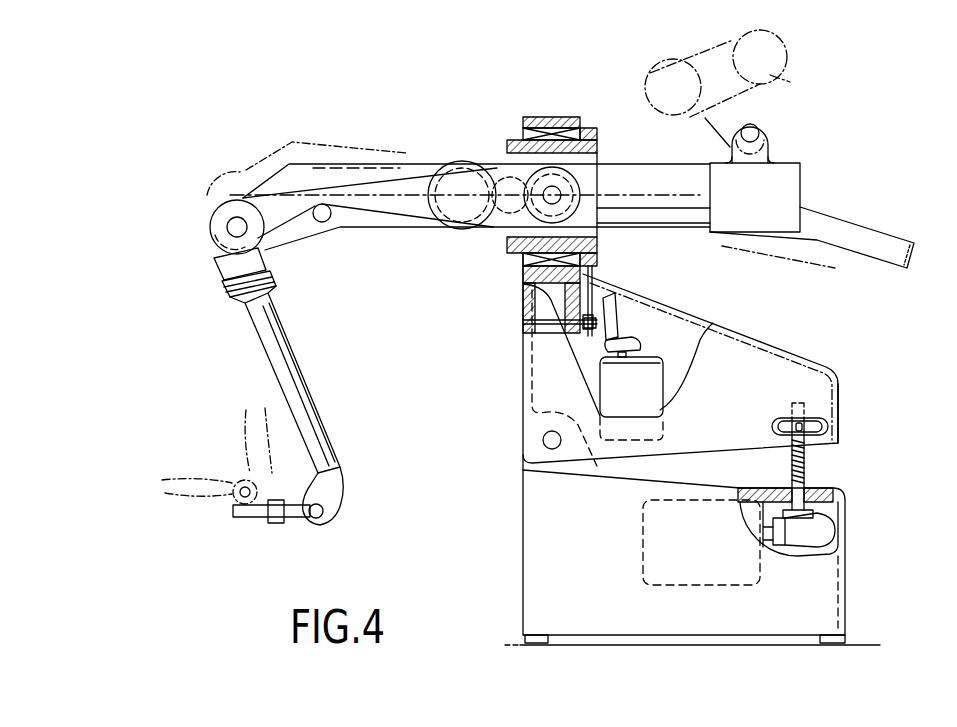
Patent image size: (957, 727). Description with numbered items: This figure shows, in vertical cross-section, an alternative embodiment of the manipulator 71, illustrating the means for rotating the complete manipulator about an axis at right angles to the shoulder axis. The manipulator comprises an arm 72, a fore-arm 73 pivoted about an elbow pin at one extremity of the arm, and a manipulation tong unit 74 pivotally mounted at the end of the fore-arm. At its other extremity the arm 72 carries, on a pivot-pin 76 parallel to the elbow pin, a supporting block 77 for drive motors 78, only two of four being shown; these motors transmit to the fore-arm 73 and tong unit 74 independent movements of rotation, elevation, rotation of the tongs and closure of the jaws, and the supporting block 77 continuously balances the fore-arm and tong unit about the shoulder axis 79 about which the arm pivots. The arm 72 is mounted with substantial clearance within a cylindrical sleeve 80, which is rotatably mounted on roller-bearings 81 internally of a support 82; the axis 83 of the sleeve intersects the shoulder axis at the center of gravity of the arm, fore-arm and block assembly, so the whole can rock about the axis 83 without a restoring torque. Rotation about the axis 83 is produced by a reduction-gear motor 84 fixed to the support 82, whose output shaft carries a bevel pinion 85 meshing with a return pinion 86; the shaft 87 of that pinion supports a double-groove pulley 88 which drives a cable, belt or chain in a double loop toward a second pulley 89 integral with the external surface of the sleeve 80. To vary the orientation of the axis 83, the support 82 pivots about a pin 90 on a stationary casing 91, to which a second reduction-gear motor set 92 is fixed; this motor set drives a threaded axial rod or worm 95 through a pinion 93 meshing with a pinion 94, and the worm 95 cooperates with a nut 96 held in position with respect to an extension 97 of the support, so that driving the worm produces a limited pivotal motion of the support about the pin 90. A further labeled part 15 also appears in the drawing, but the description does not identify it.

The pivot 15 is at (232, 227).
The manipulator 71 is at (681, 230).
The arm 72 is at (796, 172).
The fore-arm 73 is at (276, 308).
The manipulation tong unit 74 is at (350, 493).
The pivot-pin 76 is at (752, 133).
The supporting block 77 is at (790, 82).
The drive motors 78 is at (692, 33).
The shoulder axis 79 is at (556, 192).
The cylindrical sleeve 80 is at (507, 143).
The roller-bearings 81 is at (523, 133).
The support 82 is at (543, 128).
The axis 83 is at (617, 197).
The reduction-gear motor 84 is at (652, 373).
The bevel pinion 85 is at (633, 342).
The return pinion 86 is at (617, 328).
The shaft 87 is at (547, 322).
The pulley 88 is at (592, 317).
The second pulley 89 is at (597, 268).
The pin 90 is at (542, 438).
The stationary casing 91 is at (837, 607).
The reduction-gear motor set 92 is at (643, 522).
The pinion 93 is at (785, 535).
The pinion 94 is at (805, 520).
The threaded axial rod or worm 95 is at (800, 462).
The nut 96 is at (813, 427).
The extension 97 is at (832, 395).